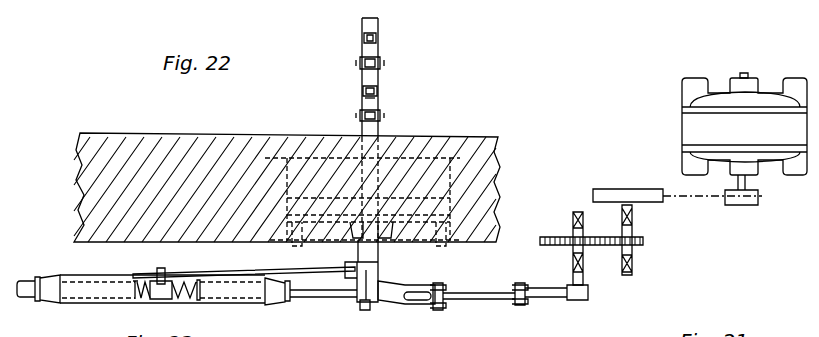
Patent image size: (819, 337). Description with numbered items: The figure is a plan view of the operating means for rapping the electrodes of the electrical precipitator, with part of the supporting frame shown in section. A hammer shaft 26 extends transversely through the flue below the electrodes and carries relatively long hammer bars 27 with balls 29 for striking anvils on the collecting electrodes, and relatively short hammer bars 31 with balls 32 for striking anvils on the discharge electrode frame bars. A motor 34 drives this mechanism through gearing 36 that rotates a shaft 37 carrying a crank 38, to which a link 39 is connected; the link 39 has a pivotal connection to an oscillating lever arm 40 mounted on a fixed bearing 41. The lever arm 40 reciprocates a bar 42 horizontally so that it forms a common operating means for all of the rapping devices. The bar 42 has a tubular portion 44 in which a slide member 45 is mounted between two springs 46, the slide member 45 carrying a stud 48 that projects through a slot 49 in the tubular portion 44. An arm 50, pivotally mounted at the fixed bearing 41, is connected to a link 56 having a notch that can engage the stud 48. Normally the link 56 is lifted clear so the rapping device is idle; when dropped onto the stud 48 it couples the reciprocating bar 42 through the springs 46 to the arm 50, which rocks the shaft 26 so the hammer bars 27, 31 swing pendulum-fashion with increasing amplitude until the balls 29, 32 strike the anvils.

The hammer shaft 26 is at (378, 87).
The long hammer bar 27 is at (380, 65).
The ball 29 is at (358, 66).
The short hammer bar 31 is at (378, 94).
The ball 32 is at (363, 93).
The motor 34 is at (682, 134).
The gearing 36 is at (596, 206).
The shaft 37 is at (573, 253).
The crank 38 is at (548, 298).
The link 39 is at (484, 300).
The oscillating lever arm 40 is at (398, 304).
The fixed bearing 41 is at (380, 252).
The reciprocating bar 42 is at (30, 298).
The tubular portion 44 is at (252, 304).
The slide member 45 is at (161, 300).
The spring 46 is at (138, 300).
The stud 48 is at (162, 268).
The slot 49 is at (140, 278).
The arm 50 is at (380, 274).
The link 56 is at (255, 273).